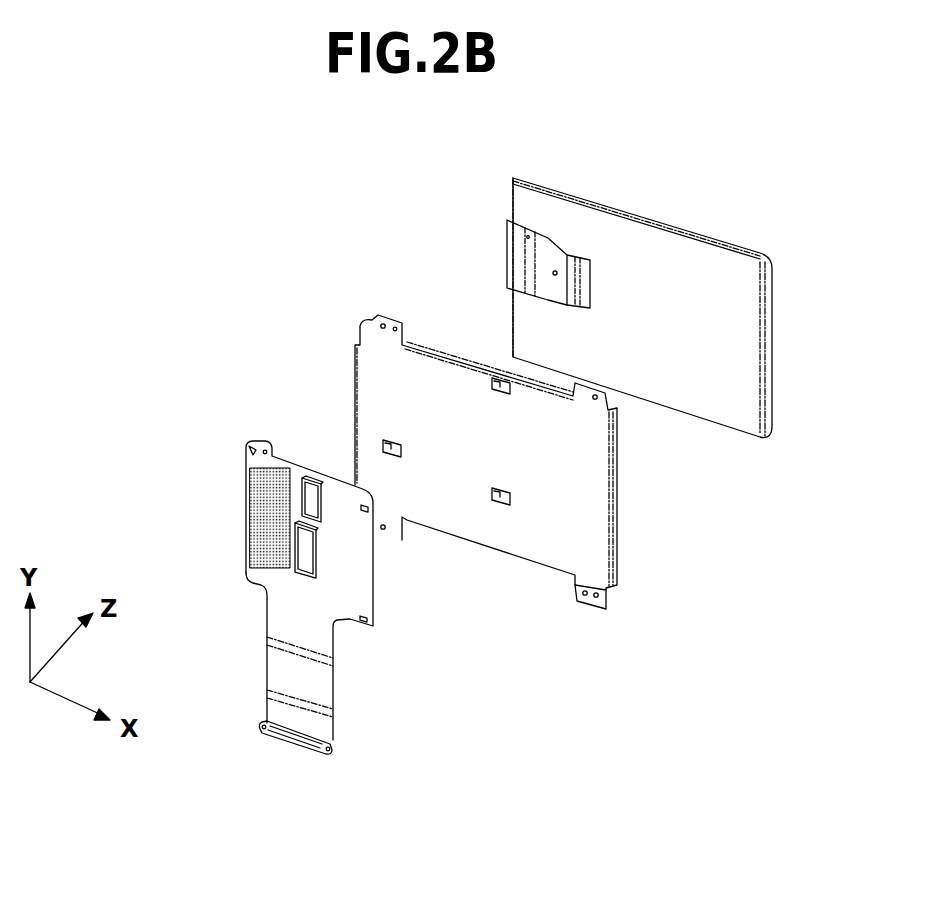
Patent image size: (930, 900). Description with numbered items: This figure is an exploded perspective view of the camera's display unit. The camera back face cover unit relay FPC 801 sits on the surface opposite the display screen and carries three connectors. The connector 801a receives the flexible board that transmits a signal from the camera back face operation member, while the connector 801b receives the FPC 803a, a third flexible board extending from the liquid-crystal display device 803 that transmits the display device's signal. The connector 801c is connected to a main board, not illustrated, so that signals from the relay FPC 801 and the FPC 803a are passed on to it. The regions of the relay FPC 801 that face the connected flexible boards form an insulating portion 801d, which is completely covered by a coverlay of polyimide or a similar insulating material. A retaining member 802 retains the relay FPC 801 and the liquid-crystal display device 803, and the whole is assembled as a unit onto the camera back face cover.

The relay FPC 801 is at (323, 692).
The connector 801a is at (300, 497).
The connector 801b is at (297, 552).
The connector 801c is at (292, 741).
The insulating portion 801d is at (260, 467).
The retaining member 802 is at (600, 505).
The liquid-crystal display device 803 is at (748, 347).
The FPC 803a is at (548, 254).